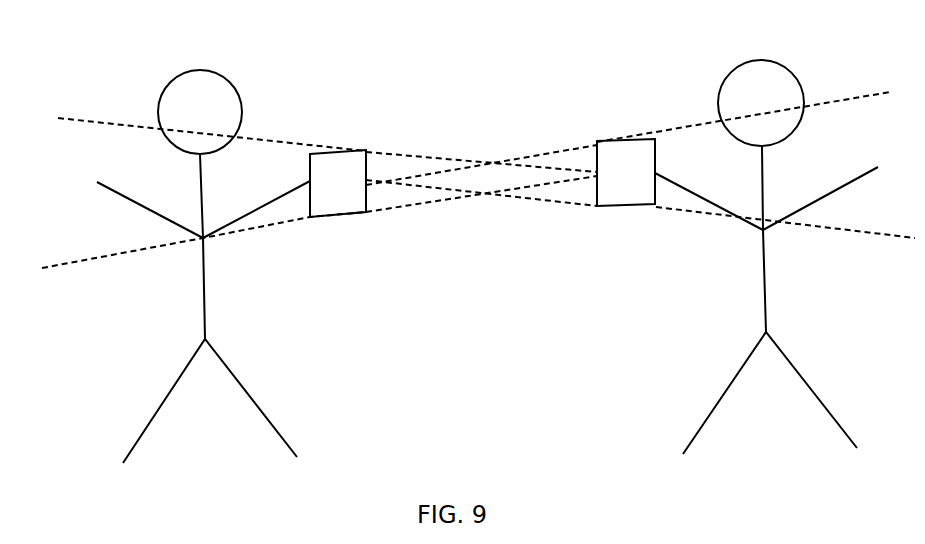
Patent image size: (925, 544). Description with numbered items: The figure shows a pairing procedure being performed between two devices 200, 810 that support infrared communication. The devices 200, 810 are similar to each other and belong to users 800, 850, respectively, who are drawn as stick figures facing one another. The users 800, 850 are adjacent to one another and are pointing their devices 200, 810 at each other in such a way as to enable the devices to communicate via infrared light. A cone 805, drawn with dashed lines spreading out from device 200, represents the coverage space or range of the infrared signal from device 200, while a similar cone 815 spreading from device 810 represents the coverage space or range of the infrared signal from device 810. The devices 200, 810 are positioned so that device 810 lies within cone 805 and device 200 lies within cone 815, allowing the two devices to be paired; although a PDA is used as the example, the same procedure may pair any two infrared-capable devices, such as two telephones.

The user 800 is at (160, 95).
The user 850 is at (743, 63).
The device 200 is at (340, 216).
The device 810 is at (642, 206).
The cone 805 is at (422, 182).
The cone 815 is at (543, 173).